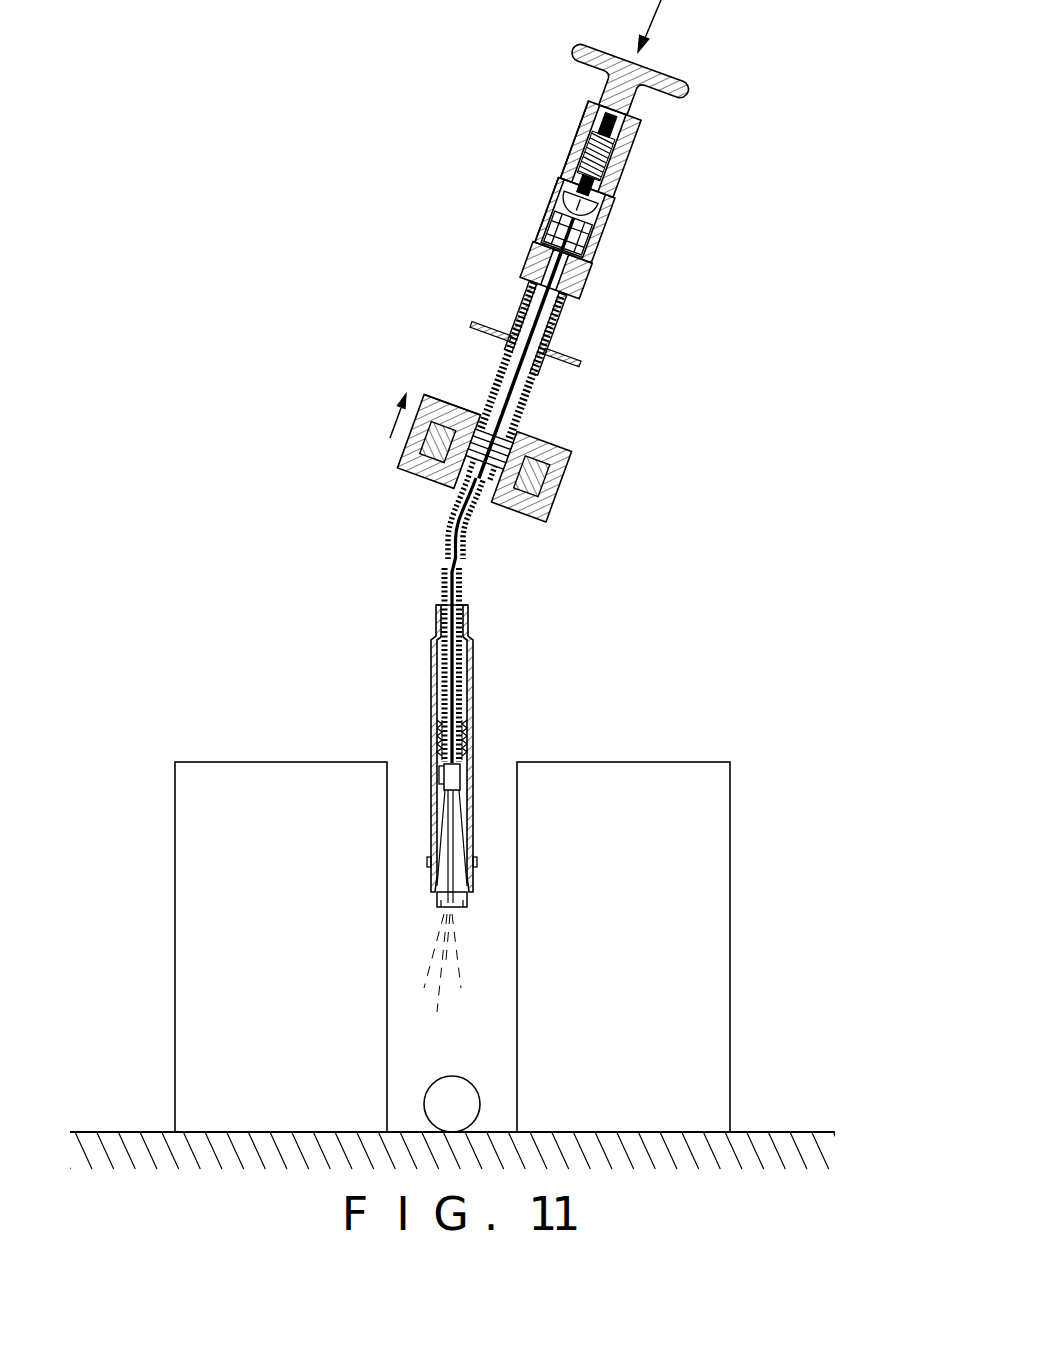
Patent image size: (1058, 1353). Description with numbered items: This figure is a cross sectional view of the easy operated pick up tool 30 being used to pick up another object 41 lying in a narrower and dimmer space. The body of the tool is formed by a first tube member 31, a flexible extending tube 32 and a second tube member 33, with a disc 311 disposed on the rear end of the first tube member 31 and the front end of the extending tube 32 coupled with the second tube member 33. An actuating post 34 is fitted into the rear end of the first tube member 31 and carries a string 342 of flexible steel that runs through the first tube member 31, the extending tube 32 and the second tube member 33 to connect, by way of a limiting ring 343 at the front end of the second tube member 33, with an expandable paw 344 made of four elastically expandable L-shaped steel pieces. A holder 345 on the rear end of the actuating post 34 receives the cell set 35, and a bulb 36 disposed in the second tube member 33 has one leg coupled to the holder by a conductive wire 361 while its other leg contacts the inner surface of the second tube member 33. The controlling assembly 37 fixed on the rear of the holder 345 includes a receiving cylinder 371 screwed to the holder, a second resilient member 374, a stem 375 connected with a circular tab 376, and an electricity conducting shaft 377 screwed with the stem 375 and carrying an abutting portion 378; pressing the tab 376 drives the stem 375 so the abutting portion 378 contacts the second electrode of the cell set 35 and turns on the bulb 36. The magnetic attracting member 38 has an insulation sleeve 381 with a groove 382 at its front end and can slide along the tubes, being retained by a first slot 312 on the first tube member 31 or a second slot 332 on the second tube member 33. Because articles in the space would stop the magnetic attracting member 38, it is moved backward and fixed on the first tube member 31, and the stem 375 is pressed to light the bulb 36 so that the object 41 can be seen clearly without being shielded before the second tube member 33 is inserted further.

The easy operated pick up tool 30 is at (428, 230).
The first tube member 31 is at (493, 358).
The disc 311 is at (580, 368).
The first slot 312 is at (507, 447).
The flexible extending tube 32 is at (463, 577).
The second tube member 33 is at (475, 670).
The second slot 332 is at (470, 843).
The actuating post 34 is at (553, 330).
The string 342 is at (462, 603).
The limiting ring 343 is at (457, 780).
The expandable paw 344 is at (460, 810).
The holder 345 is at (587, 263).
The cell set 35 is at (548, 208).
The bulb 36 is at (440, 773).
The conductive wire 361 is at (440, 600).
The controlling assembly 37 is at (797, 87).
The receiving cylinder 371 is at (630, 135).
The second resilient member 374 is at (620, 165).
The stem 375 is at (628, 107).
The circular tab 376 is at (688, 94).
The electricity conducting shaft 377 is at (610, 193).
The abutting portion 378 is at (602, 217).
The magnetic attracting member 38 is at (418, 475).
The insulation sleeve 381 is at (557, 480).
The groove 382 is at (455, 408).
The object 41 is at (468, 1093).